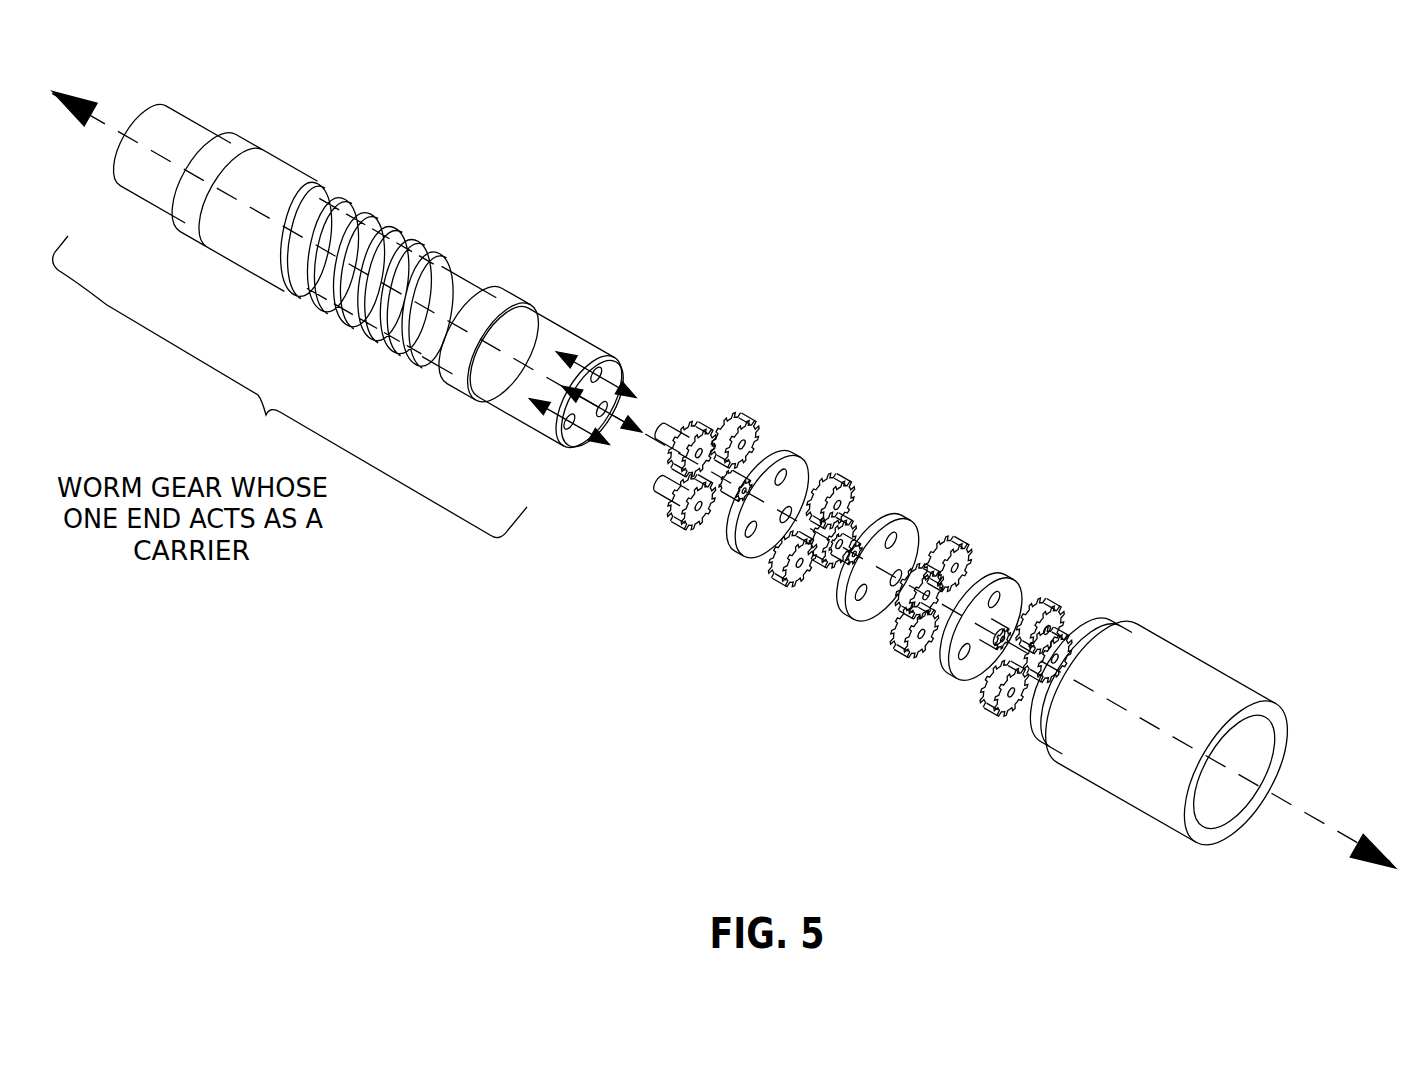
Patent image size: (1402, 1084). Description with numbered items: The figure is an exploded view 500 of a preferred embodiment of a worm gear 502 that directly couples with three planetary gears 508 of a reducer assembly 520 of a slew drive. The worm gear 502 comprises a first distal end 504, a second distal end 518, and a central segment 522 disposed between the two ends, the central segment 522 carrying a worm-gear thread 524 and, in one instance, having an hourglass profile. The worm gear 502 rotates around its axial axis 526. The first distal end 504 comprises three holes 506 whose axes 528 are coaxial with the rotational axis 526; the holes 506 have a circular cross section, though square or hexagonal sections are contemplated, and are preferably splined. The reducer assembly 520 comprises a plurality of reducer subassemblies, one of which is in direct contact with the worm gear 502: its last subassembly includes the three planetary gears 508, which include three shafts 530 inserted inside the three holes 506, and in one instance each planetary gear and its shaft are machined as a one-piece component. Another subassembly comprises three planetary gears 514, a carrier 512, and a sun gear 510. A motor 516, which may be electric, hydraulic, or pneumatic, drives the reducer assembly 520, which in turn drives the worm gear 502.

The exploded view 500 is at (964, 163).
The worm gear 502 is at (329, 258).
The first distal end 504 is at (563, 399).
The holes 506 is at (592, 403).
The planetary gears 508 is at (738, 423).
The sun gear 510 is at (742, 540).
The carrier 512 is at (737, 543).
The planetary gears 514 is at (853, 515).
The motor 516 is at (1205, 664).
The second distal end 518 is at (177, 119).
The reducer assembly 520 is at (1103, 593).
The central segment 522 is at (429, 294).
The worm-gear thread 524 is at (392, 226).
The axial axis 526 is at (1333, 832).
The axes of the holes 528 is at (592, 404).
The shafts 530 is at (702, 423).